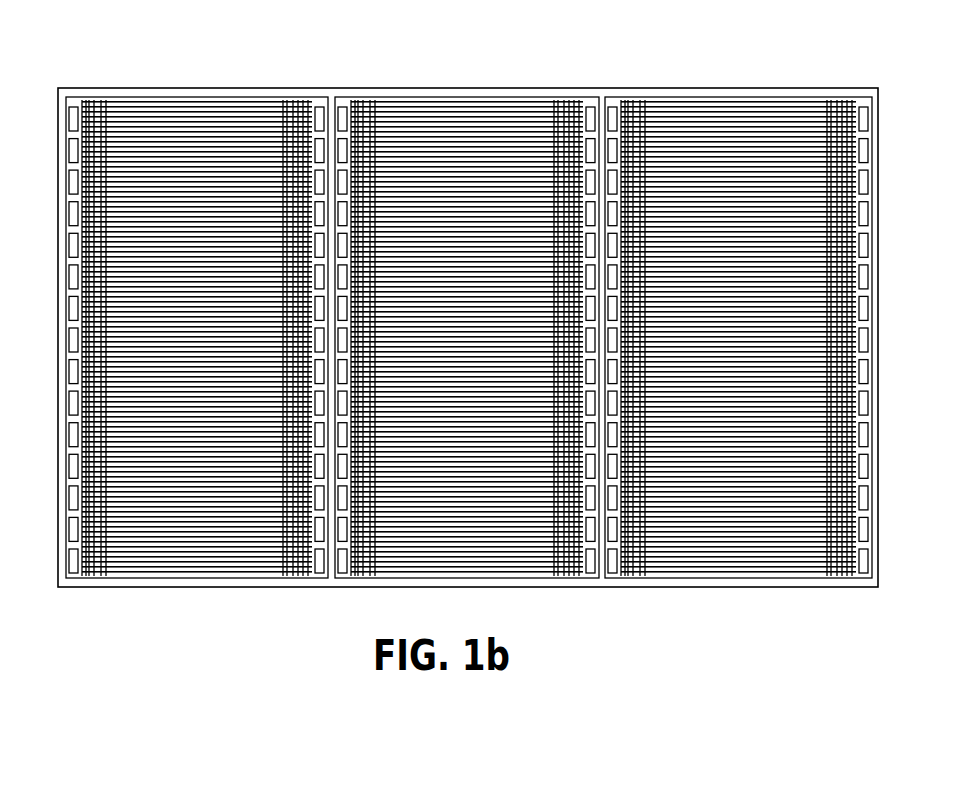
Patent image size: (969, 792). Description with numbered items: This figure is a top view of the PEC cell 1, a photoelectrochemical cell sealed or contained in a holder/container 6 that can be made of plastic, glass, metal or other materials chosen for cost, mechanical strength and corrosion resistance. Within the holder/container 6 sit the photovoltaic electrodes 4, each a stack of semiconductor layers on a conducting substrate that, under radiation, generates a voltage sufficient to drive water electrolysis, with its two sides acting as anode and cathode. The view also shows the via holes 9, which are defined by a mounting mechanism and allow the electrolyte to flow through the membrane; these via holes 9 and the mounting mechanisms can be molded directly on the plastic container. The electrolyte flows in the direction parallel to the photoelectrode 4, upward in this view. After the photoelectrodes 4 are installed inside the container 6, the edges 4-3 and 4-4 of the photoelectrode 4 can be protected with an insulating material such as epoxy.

The PEC cell 1 is at (505, 90).
The photovoltaic electrode 4 is at (253, 97).
The edge of the photoelectrode 4-3 is at (773, 587).
The edge of the photoelectrode 4-4 is at (748, 88).
The holder/container 6 is at (150, 590).
The via holes 9 is at (590, 148).